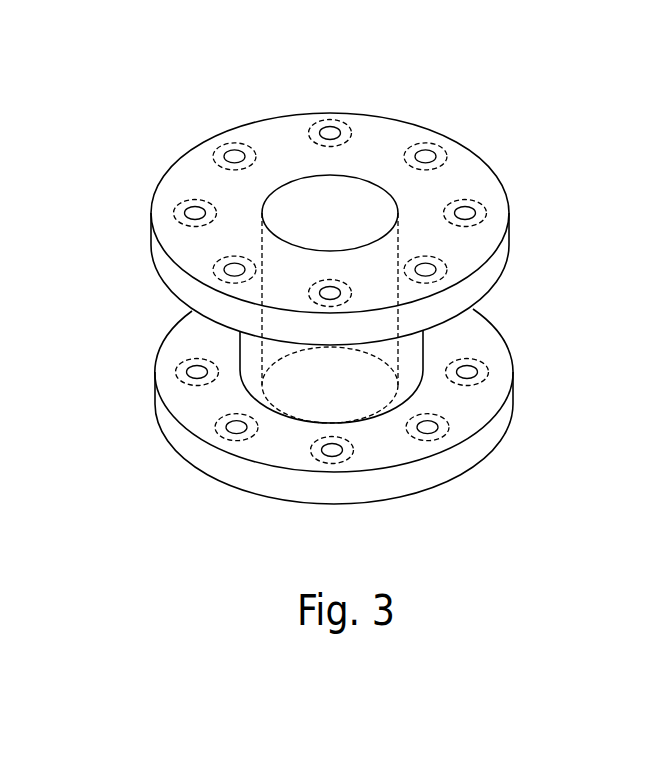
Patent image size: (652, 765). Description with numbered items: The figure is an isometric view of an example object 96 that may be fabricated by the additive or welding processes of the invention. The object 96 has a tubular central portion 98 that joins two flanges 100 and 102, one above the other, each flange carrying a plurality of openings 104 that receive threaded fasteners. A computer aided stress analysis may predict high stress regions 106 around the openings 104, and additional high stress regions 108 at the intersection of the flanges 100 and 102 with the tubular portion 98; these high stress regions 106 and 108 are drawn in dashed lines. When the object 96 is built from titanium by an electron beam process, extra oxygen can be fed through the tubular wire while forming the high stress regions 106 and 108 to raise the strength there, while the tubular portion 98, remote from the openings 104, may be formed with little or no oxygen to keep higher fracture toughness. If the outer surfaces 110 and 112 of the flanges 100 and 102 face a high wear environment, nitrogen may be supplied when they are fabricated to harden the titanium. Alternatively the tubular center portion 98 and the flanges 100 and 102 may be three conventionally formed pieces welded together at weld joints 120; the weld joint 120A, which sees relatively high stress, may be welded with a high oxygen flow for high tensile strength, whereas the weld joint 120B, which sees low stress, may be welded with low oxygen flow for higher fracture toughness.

The object 96 is at (356, 311).
The tubular central portion 98 is at (346, 405).
The flange 100 is at (394, 229).
The flange 102 is at (394, 386).
The openings 104 is at (237, 152).
The high stress regions 106 is at (214, 155).
The high stress regions 108 is at (278, 415).
The outer surface 110 is at (497, 267).
The outer surface 112 is at (482, 442).
The weld joints 120 is at (363, 416).
The weld joint 120A is at (241, 369).
The weld joint 120B is at (424, 346).